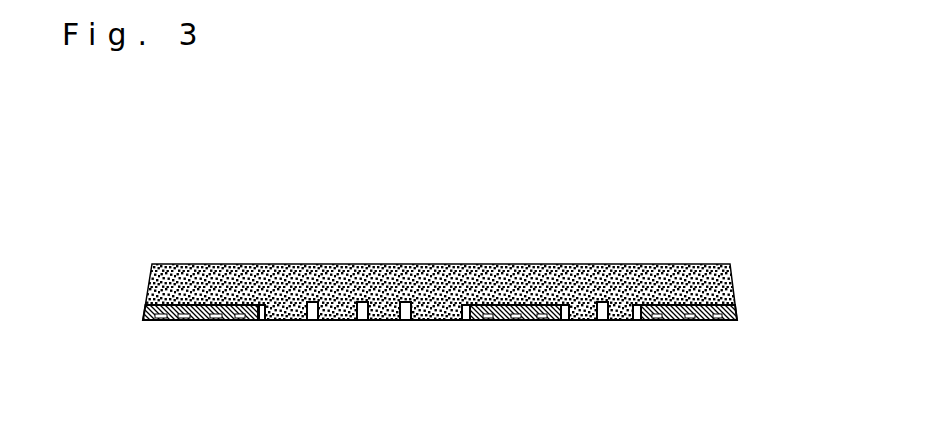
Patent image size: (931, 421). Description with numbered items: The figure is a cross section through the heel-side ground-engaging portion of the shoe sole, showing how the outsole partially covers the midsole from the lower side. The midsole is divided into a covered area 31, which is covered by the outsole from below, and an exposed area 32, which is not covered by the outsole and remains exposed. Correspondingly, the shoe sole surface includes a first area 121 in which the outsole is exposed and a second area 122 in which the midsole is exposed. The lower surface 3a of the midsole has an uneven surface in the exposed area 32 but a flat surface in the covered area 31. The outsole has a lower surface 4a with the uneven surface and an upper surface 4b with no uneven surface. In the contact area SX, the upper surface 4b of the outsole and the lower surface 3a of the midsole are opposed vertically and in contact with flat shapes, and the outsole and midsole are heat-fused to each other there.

The covered area 31 is at (260, 258).
The exposed area 32 is at (470, 258).
The first area 121 is at (144, 325).
The second area 122 is at (460, 325).
The contact area SX is at (232, 305).
The lower surface of the midsole 3a is at (623, 327).
The lower surface of the outsole 4a is at (718, 327).
The upper surface of the outsole 4b is at (730, 288).